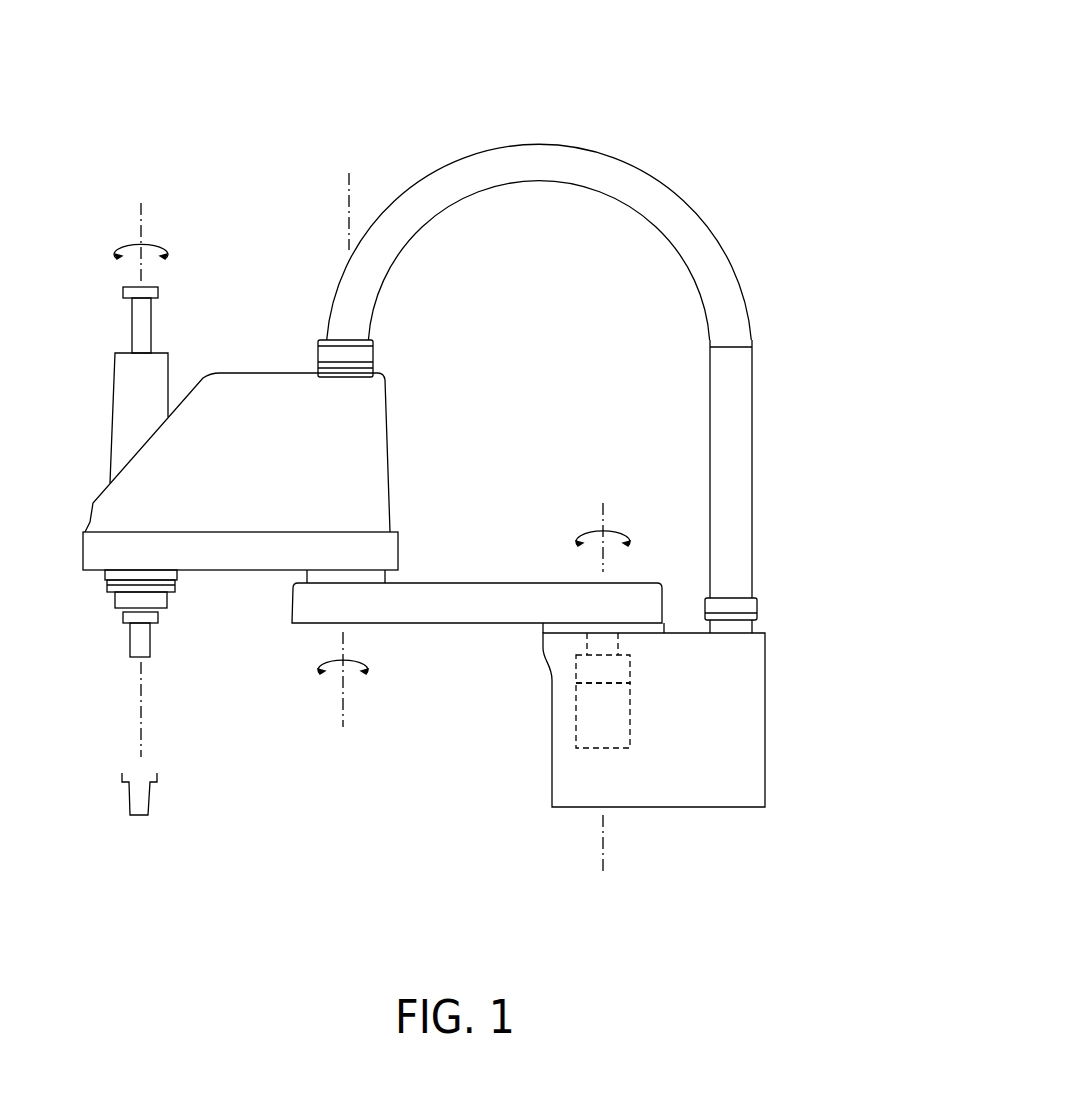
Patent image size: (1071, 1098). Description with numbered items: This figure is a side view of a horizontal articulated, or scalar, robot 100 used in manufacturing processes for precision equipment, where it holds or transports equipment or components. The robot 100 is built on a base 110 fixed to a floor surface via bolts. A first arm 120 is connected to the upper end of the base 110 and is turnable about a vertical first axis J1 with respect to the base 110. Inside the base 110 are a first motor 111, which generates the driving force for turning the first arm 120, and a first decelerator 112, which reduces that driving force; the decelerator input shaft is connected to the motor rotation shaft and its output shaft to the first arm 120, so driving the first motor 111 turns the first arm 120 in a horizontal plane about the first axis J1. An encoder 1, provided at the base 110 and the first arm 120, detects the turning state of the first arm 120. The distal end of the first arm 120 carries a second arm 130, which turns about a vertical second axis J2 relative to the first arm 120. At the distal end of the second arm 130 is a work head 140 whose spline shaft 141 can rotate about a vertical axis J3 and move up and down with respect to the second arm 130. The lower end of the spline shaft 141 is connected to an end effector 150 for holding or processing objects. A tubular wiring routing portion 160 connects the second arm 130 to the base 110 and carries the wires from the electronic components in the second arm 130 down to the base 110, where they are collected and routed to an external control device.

The robot 100 is at (648, 79).
The base 110 is at (670, 720).
The first motor 111 is at (576, 718).
The first decelerator 112 is at (576, 672).
The encoder 1 is at (672, 612).
The first arm 120 is at (489, 572).
The second arm 130 is at (400, 404).
The work head 140 is at (151, 385).
The spline shaft 141 is at (136, 322).
The end effector 150 is at (152, 640).
The wiring routing portion 160 is at (707, 200).
The first axis J1 is at (603, 522).
The second axis J2 is at (345, 692).
The axis J3 is at (143, 221).